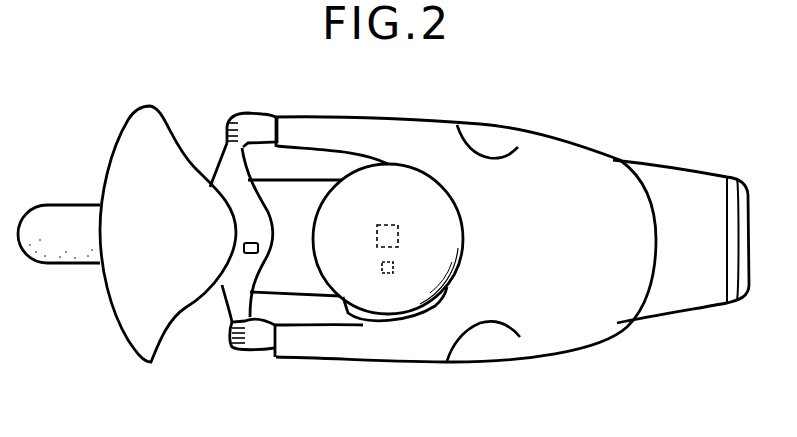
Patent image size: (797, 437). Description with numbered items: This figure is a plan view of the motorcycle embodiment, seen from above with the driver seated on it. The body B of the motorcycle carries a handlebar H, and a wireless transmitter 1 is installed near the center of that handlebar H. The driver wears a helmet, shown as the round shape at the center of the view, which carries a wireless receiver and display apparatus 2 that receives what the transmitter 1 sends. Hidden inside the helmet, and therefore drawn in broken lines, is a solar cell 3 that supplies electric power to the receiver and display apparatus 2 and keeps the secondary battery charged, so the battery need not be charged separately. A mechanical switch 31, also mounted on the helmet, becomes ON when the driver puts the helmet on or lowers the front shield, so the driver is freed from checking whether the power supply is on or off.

The wireless transmitter 1 is at (248, 255).
The wireless receiver and display apparatus 2 is at (353, 315).
The solar cell 3 is at (387, 224).
The mechanical switch 31 is at (389, 275).
The handlebar H is at (228, 158).
The body B is at (676, 152).